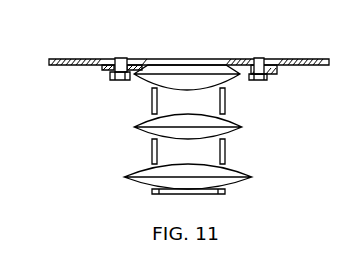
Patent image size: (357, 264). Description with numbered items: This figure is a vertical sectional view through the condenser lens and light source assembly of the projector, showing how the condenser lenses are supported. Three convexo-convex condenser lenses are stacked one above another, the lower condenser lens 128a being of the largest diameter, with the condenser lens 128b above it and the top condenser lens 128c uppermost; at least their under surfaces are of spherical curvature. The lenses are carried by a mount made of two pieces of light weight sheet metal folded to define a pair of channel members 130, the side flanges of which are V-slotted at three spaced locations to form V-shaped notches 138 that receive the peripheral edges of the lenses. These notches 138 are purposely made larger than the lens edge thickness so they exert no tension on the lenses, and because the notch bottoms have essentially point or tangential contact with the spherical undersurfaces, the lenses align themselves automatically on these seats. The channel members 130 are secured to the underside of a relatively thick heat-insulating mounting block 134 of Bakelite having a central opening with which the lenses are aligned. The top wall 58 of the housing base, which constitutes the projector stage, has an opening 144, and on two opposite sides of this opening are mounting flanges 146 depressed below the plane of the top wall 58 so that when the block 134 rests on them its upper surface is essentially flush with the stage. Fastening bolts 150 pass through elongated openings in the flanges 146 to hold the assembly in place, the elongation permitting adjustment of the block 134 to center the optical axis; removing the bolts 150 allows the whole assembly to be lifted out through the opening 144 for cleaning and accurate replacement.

The top wall 58 is at (46, 50).
The mounting plate or block 134 is at (127, 50).
The fastening bolts 150 is at (112, 50).
The mounting flanges or seats 146 is at (101, 64).
The opening 144 is at (268, 56).
The top condenser lens 128c is at (226, 74).
The condenser lens 128b is at (235, 121).
The lower condenser lens 128a is at (244, 169).
The channel members 130 is at (217, 146).
The V-shaped notches 138 is at (144, 101).